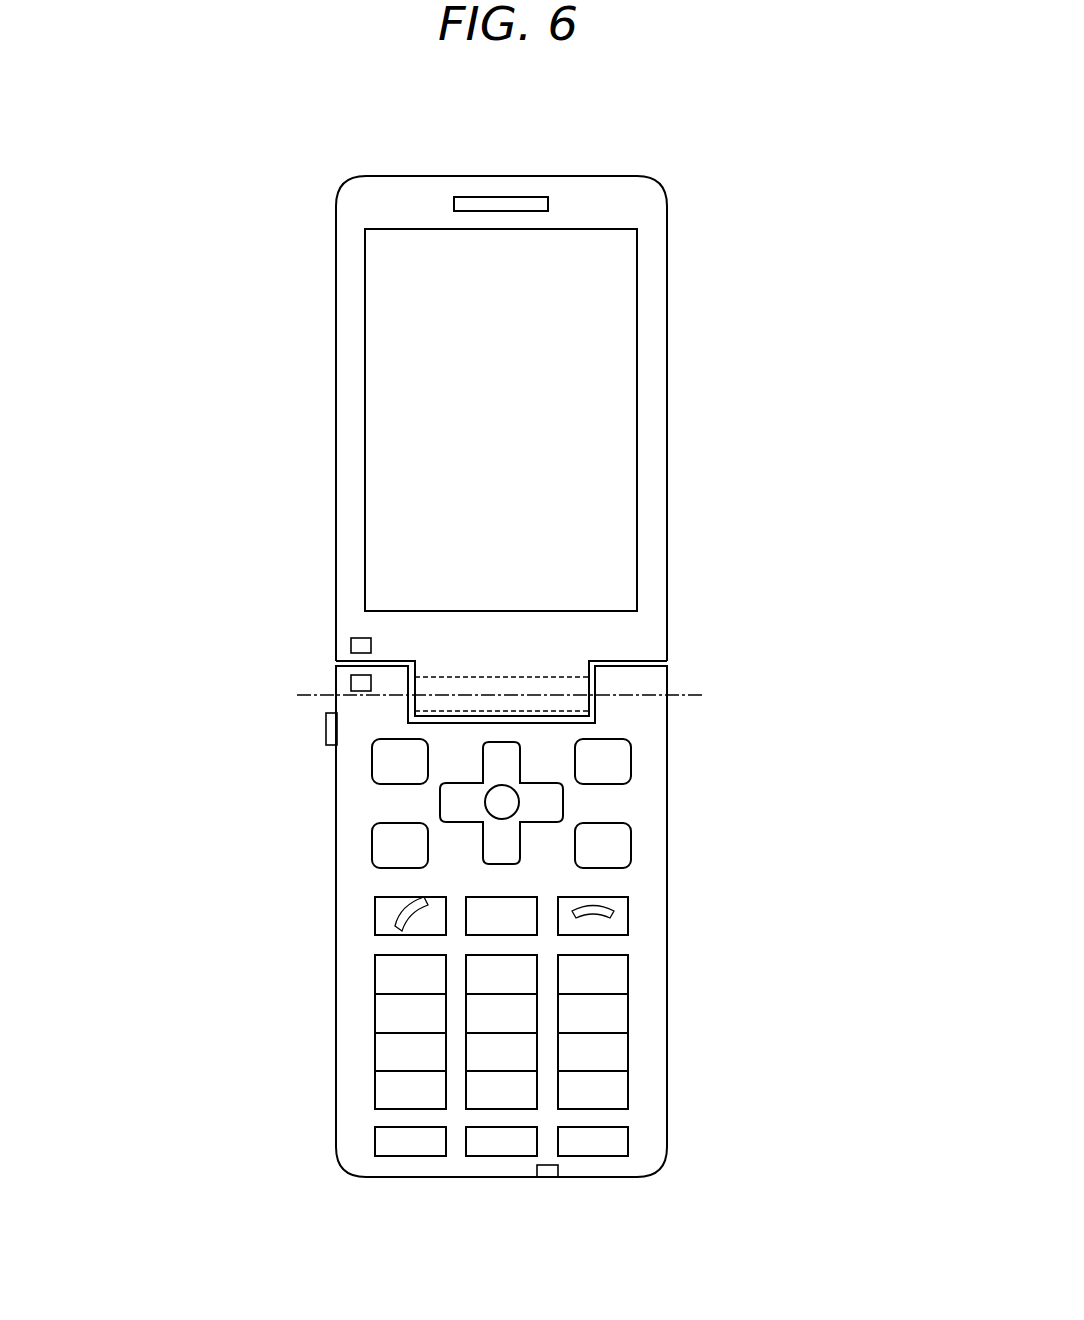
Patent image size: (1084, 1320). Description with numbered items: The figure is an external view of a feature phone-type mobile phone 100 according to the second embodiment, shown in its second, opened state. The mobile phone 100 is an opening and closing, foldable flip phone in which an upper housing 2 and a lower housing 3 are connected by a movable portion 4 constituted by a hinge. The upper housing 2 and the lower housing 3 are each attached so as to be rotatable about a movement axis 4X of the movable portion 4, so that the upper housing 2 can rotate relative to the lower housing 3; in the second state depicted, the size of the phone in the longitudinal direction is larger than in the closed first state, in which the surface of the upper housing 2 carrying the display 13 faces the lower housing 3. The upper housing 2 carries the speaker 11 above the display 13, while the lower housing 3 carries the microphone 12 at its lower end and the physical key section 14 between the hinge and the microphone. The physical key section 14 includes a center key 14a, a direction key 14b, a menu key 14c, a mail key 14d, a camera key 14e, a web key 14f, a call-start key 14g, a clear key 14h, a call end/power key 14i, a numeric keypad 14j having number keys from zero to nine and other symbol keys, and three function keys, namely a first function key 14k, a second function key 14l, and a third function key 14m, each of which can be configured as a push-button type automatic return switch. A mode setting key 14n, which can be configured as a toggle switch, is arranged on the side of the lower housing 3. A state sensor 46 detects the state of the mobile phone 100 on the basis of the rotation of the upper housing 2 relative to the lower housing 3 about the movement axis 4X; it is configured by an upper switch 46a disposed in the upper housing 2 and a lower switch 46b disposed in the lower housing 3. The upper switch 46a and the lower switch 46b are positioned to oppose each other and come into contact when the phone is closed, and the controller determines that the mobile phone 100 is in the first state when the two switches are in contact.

The mobile phone 100 is at (642, 121).
The upper housing 2 is at (590, 176).
The lower housing 3 is at (606, 1179).
The movable portion 4 is at (590, 660).
The movement axis 4X is at (689, 695).
The speaker 11 is at (510, 202).
The microphone 12 is at (548, 1179).
The display 13 is at (638, 400).
The physical key section 14 is at (501, 932).
The center key 14a is at (499, 805).
The direction key 14b is at (552, 805).
The menu key 14c is at (381, 762).
The mail key 14d is at (381, 845).
The camera key 14e is at (622, 762).
The web key 14f is at (622, 845).
The call-start key 14g is at (386, 915).
The clear key 14h is at (522, 904).
The call end/power key 14i is at (612, 915).
The numeric keypad 14j is at (622, 972).
The first function key 14k is at (386, 1140).
The second function key 14l is at (482, 1134).
The third function key 14m is at (649, 1141).
The mode setting key 14n is at (330, 730).
The state sensor 46 is at (286, 640).
The upper switch 46a is at (357, 646).
The lower switch 46b is at (322, 675).